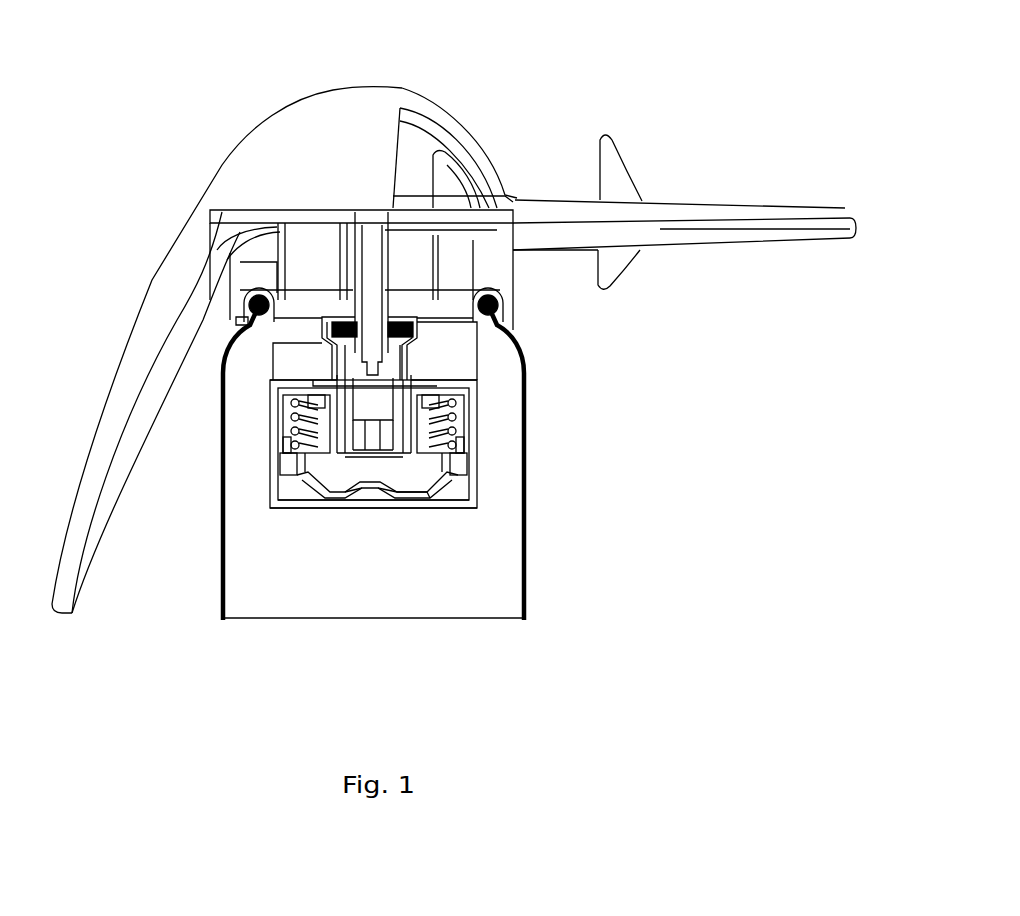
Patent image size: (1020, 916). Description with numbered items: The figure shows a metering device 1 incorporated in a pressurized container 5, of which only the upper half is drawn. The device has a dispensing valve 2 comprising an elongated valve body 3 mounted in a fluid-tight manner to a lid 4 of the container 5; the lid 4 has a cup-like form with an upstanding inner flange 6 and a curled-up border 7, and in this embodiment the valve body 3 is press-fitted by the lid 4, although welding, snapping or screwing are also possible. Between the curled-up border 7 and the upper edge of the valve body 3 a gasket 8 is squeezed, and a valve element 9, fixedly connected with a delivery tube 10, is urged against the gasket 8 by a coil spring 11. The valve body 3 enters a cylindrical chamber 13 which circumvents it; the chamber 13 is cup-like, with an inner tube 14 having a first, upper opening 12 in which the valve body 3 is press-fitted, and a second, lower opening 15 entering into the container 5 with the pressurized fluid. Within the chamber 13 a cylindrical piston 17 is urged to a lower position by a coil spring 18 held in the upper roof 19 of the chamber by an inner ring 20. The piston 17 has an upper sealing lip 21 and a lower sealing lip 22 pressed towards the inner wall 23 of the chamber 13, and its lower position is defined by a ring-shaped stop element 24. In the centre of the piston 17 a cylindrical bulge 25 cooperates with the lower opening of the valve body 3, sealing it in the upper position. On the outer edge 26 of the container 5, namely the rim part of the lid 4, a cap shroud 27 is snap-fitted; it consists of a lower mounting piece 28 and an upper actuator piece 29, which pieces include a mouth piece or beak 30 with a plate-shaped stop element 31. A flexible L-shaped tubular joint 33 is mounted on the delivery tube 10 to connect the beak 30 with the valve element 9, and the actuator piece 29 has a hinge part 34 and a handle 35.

The metering device 1 is at (487, 445).
The dispensing valve 2 is at (345, 361).
The valve body 3 is at (403, 428).
The lid 4 is at (475, 355).
The pressurized container 5 is at (527, 572).
The inner flange 6 is at (440, 332).
The curled-up border 7 is at (392, 312).
The gasket 8 is at (425, 320).
The valve element 9 is at (236, 322).
The delivery tube 10 is at (360, 262).
The coil spring 11 is at (450, 398).
The upper opening 12 is at (362, 463).
The cylindrical chamber 13 is at (330, 472).
The inner tube 14 is at (327, 442).
The lower opening 15 is at (358, 515).
The cylindrical piston 17 is at (405, 497).
The coil spring 18 is at (455, 455).
The upper roof 19 is at (453, 388).
The inner ring 20 is at (323, 368).
The upper sealing lip 21 is at (287, 443).
The lower sealing lip 22 is at (285, 492).
The inner wall 23 is at (278, 425).
The ring-shaped stop element 24 is at (470, 502).
The cylindrical bulge 25 is at (377, 497).
The outer edge 26 is at (233, 300).
The cap shroud 27 is at (409, 89).
The mounting piece 28 is at (237, 277).
The actuator piece 29 is at (233, 180).
The beak 30 is at (678, 218).
The plate-shaped stop element 31 is at (605, 190).
The L-shaped tubular joint 33 is at (455, 210).
The hinge part 34 is at (468, 148).
The handle 35 is at (120, 407).